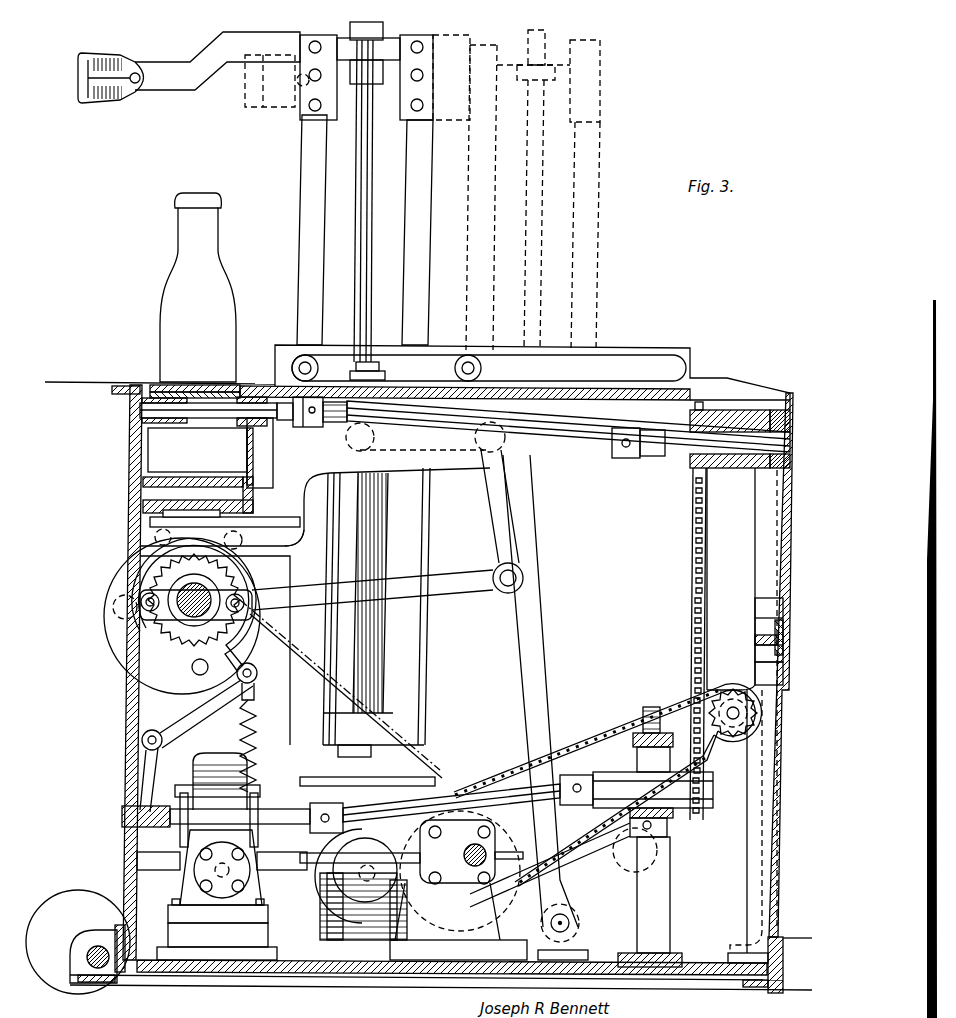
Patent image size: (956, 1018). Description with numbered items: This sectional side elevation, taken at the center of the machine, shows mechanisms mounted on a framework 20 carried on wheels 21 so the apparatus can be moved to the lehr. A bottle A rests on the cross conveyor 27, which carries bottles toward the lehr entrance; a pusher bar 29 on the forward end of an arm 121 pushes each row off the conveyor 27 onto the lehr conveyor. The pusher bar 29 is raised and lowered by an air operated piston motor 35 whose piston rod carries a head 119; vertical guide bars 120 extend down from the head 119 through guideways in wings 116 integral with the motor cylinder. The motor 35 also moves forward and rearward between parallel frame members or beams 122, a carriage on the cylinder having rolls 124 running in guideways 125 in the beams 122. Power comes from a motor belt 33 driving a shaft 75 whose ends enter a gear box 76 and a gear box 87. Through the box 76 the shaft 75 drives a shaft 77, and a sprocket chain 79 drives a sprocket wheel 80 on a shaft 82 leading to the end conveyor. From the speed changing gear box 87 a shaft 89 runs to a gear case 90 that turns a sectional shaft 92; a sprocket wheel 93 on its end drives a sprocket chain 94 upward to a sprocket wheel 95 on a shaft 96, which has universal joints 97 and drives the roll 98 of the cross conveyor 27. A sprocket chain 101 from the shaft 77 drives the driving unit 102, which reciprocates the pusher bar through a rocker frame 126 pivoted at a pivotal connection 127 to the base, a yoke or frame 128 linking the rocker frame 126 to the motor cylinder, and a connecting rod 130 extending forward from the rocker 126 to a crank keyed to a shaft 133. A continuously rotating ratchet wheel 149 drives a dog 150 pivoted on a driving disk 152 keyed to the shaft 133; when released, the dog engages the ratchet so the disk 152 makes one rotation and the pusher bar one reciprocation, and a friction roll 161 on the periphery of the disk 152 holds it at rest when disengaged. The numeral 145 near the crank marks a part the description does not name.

The bottle A is at (175, 268).
The framework 20 is at (88, 983).
The wheels 21 is at (172, 985).
The cross conveyor 27 is at (240, 383).
The pusher bar 29 is at (85, 104).
The belt 33 is at (607, 878).
The piston motor 35 is at (365, 560).
The shaft 75 is at (400, 845).
The gear box 76 is at (322, 920).
The shaft 77 is at (472, 850).
The sprocket chain 79 is at (627, 730).
The sprocket wheel 80 is at (712, 757).
The shaft 82 is at (733, 712).
The gear box 87 is at (323, 792).
The shaft 89 is at (193, 880).
The gear case 90 is at (207, 768).
The sectional shaft 92 is at (408, 805).
The sprocket wheel 93 is at (712, 792).
The sprocket chain 94 is at (697, 593).
The sprocket wheel 95 is at (695, 424).
The shaft 96 is at (550, 432).
The universal joints 97 is at (650, 458).
The driving roll 98 is at (177, 433).
The sprocket chain 101 is at (357, 689).
The driving unit 102 is at (243, 562).
The wings 116 is at (415, 645).
The head 119 is at (384, 48).
The vertical guide bars 120 is at (303, 184).
The arm 121 is at (178, 85).
The frame members 122 is at (550, 455).
The rolls 124 is at (482, 372).
The guideways 125 is at (667, 372).
The rocker frame 126 is at (525, 633).
The pivotal connection 127 is at (575, 935).
The yoke 128 is at (450, 452).
The connecting rod 130 is at (413, 588).
The shaft 133 is at (194, 610).
The crank arm 145 is at (316, 595).
The ratchet wheel 149 is at (157, 575).
The dog 150 is at (187, 668).
The driving disk 152 is at (113, 570).
The friction roll 161 is at (245, 672).